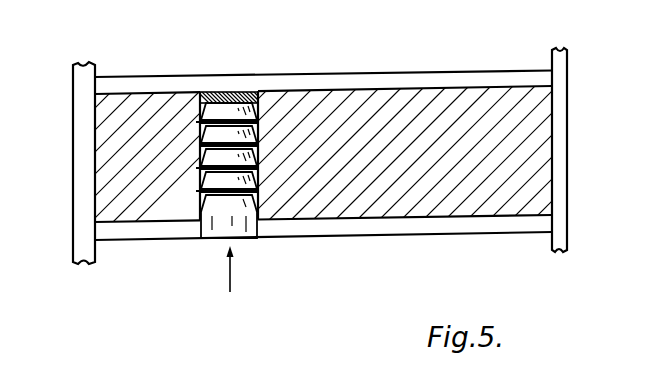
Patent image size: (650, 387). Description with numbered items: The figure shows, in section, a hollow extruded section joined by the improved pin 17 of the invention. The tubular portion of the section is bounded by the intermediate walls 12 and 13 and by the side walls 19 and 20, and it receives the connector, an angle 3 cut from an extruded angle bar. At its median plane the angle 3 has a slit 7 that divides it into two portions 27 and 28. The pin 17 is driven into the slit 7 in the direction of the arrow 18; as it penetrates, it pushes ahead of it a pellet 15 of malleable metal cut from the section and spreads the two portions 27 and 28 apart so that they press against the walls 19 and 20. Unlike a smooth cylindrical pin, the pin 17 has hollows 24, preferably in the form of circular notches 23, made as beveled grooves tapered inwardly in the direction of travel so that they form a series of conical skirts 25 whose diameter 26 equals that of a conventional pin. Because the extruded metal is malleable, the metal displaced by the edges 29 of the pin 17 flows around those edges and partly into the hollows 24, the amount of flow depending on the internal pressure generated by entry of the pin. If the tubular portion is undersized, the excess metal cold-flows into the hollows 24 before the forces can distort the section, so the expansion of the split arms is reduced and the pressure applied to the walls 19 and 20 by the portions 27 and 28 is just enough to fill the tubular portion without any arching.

The angle 3 is at (420, 98).
The slit 7 is at (247, 156).
The intermediate wall 12 is at (395, 228).
The intermediate wall 13 is at (367, 80).
The pellet 15 is at (228, 90).
The pin 17 is at (233, 223).
The arrow 18 is at (231, 276).
The wall 19 is at (83, 97).
The wall 20 is at (556, 98).
The circular notch 23 is at (257, 125).
The hollow 24 is at (200, 128).
The conical skirt 25 is at (200, 163).
The diameter 26 is at (200, 188).
The portion of the angle 27 is at (110, 184).
The portion of the angle 28 is at (530, 167).
The edges 29 is at (257, 162).